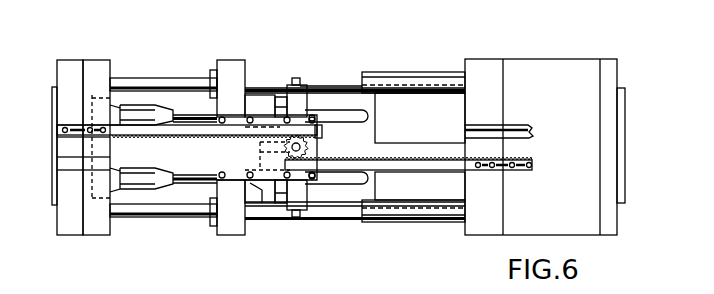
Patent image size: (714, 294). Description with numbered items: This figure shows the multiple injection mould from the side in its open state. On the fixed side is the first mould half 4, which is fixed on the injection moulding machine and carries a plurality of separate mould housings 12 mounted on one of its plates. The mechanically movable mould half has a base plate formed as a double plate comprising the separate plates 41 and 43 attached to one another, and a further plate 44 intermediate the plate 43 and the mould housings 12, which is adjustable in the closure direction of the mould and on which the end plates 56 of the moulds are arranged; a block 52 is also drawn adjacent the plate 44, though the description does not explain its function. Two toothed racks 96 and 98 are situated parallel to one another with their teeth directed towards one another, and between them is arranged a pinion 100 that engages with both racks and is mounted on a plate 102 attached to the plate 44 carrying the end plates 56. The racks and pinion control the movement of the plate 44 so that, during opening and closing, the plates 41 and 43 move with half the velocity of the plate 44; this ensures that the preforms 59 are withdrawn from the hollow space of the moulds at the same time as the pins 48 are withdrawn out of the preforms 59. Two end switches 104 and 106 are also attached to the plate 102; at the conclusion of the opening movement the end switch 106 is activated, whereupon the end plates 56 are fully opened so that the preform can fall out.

The first mould half 4 is at (551, 58).
The mould housings 12 is at (430, 107).
The plate 41 is at (70, 68).
The plate 43 is at (100, 68).
The plate 44 is at (237, 70).
The pins 48 is at (187, 110).
The bearing block 52 is at (258, 103).
The end plates 56 is at (278, 107).
The preforms 59 is at (333, 108).
The toothed rack 96 is at (140, 125).
The toothed rack 98 is at (403, 165).
The pinion 100 is at (304, 188).
The plate 102 is at (262, 180).
The end switch 104 is at (300, 93).
The end switch 106 is at (290, 200).